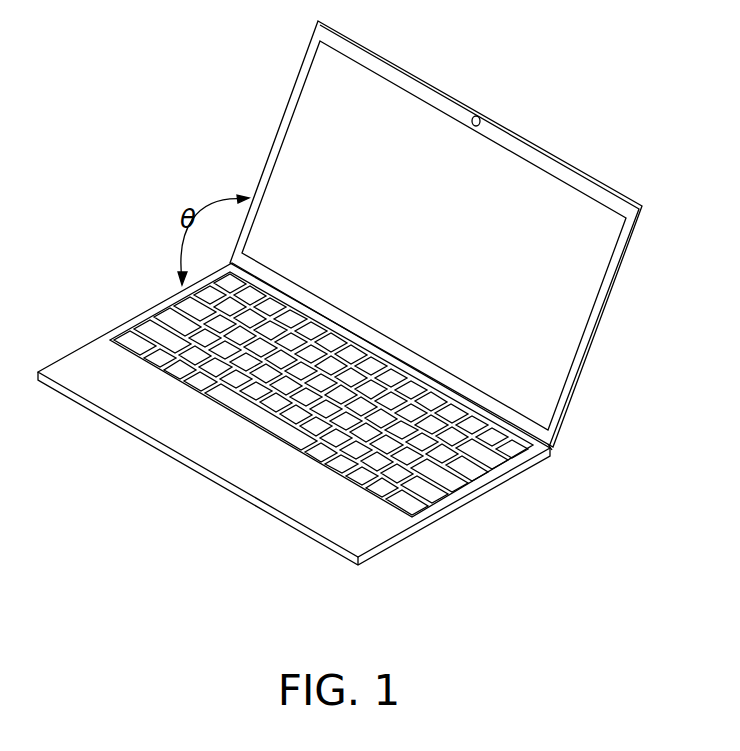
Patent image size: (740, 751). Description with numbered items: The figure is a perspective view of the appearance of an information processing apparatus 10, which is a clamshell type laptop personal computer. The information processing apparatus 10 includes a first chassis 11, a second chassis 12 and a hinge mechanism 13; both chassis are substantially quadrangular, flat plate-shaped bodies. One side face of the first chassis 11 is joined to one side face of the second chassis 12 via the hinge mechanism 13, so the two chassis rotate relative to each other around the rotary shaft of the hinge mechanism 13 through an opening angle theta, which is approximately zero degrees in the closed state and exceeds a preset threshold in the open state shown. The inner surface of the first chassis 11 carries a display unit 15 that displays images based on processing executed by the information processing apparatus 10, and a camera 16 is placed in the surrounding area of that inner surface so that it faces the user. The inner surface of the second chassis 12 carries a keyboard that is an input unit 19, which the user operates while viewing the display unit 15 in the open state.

The information processing apparatus 10 is at (550, 101).
The first chassis 11 is at (565, 158).
The second chassis 12 is at (490, 492).
The hinge mechanism 13 is at (551, 448).
The display unit 15 is at (317, 143).
The camera 16 is at (472, 118).
The input unit 19 is at (172, 318).